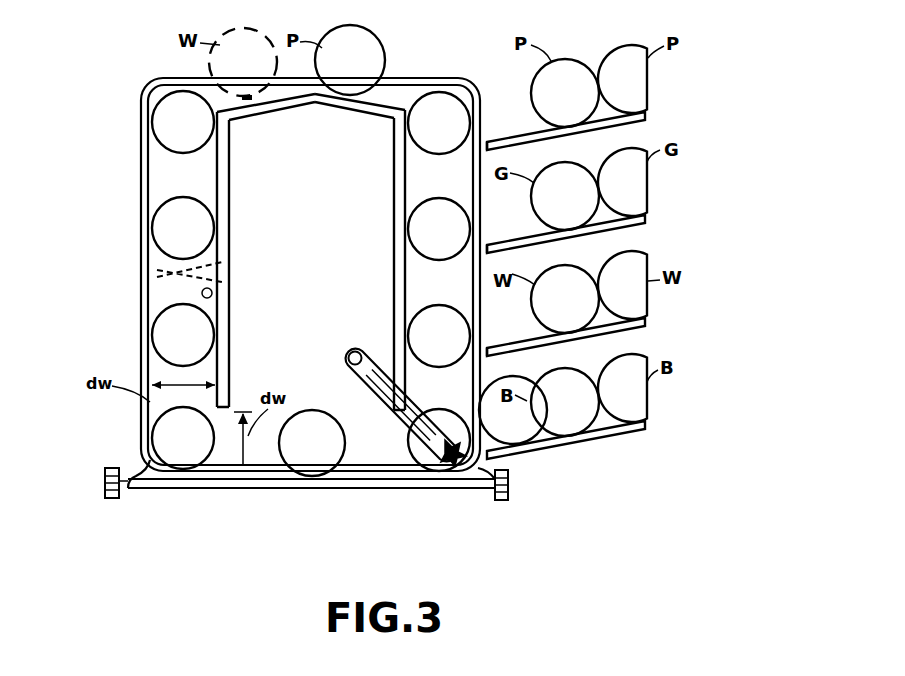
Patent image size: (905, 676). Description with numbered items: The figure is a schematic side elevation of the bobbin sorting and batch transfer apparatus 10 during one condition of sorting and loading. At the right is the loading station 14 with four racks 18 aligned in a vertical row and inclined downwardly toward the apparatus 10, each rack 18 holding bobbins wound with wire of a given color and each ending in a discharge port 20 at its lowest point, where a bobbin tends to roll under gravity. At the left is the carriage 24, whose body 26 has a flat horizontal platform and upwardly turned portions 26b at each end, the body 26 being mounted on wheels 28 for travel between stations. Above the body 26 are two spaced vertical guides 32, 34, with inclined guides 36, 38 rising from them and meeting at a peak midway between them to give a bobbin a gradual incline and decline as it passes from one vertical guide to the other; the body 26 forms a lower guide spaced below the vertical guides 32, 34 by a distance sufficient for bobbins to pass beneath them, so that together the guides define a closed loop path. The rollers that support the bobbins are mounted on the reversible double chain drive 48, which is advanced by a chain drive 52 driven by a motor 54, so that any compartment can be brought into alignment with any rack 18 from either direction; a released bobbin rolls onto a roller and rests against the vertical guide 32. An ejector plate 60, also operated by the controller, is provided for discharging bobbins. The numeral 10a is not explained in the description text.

The bobbin sorting and batch transfer apparatus 10 is at (127, 99).
The feeder assembly 10a is at (710, 148).
The loading station 14 is at (674, 90).
The racks 18 is at (646, 117).
The discharge port 20 is at (487, 146).
The carriage 24 is at (305, 482).
The body 26 is at (288, 490).
The upwardly turned portions 26b is at (136, 470).
The wheels 28 is at (105, 481).
The vertical guide 32 is at (372, 260).
The vertical guide 34 is at (229, 189).
The inclined guide 36 is at (268, 104).
The inclined guide 38 is at (368, 106).
The double chain drive 48 is at (156, 268).
The chain drive 52 is at (385, 348).
The motor 54 is at (346, 356).
The ejector plate 60 is at (212, 291).